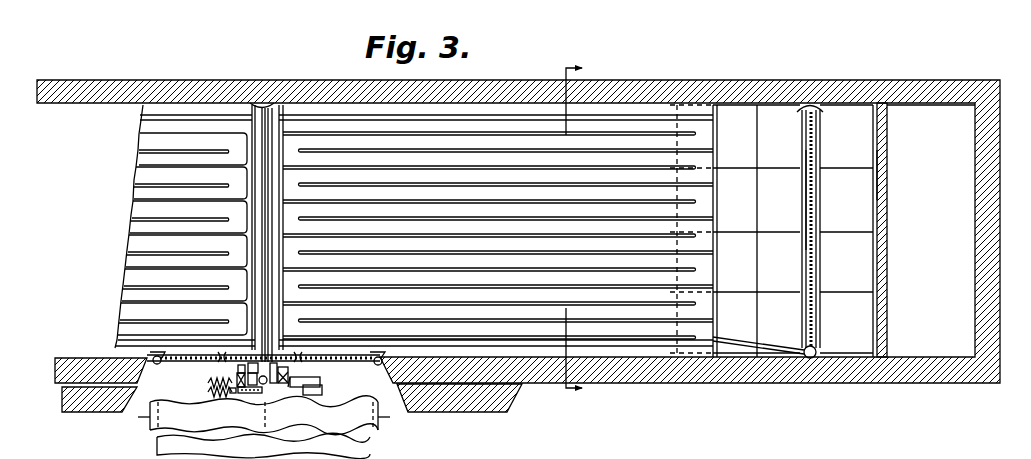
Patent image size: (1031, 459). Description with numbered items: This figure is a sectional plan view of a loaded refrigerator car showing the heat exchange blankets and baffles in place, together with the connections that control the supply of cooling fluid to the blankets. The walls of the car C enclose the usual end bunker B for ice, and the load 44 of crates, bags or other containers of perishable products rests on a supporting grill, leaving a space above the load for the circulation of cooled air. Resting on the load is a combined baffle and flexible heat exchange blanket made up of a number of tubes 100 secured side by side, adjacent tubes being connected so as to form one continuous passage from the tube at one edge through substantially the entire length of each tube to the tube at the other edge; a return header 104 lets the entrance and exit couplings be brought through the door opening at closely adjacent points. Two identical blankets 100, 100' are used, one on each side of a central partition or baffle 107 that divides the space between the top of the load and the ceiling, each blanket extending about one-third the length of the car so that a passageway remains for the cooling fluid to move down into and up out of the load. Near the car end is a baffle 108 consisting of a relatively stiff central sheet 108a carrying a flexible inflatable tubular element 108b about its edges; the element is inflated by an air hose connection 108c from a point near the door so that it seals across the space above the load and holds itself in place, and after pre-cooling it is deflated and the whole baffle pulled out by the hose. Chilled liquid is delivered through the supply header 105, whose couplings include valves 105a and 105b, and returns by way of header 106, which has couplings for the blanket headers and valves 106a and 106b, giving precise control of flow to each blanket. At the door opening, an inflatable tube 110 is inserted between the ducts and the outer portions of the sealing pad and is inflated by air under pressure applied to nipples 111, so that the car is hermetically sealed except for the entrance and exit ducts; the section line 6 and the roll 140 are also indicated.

The walls of refrigerator car C is at (723, 81).
The blanket 100' is at (166, 227).
The tubes 100 is at (576, 231).
The return header 104 is at (250, 156).
The central partition or baffle 107 is at (263, 103).
The baffle 108 is at (824, 145).
The central sheet 108a is at (818, 252).
The flexible inflatable tubular element 108b is at (819, 348).
The air hose connection 108c is at (737, 338).
The load 44 is at (865, 188).
The end bunker B is at (935, 215).
The section line 6- 6 is at (574, 231).
The nipples 111 is at (160, 363).
The inflatable tube 110 is at (153, 366).
The valve 106b is at (287, 360).
The exit coupling / return header 106 is at (345, 381).
The entrance coupling / supply header 105 is at (317, 391).
The valve 105a is at (230, 375).
The valve 106a is at (256, 393).
The valve 105b is at (290, 387).
The roll 140 is at (213, 388).